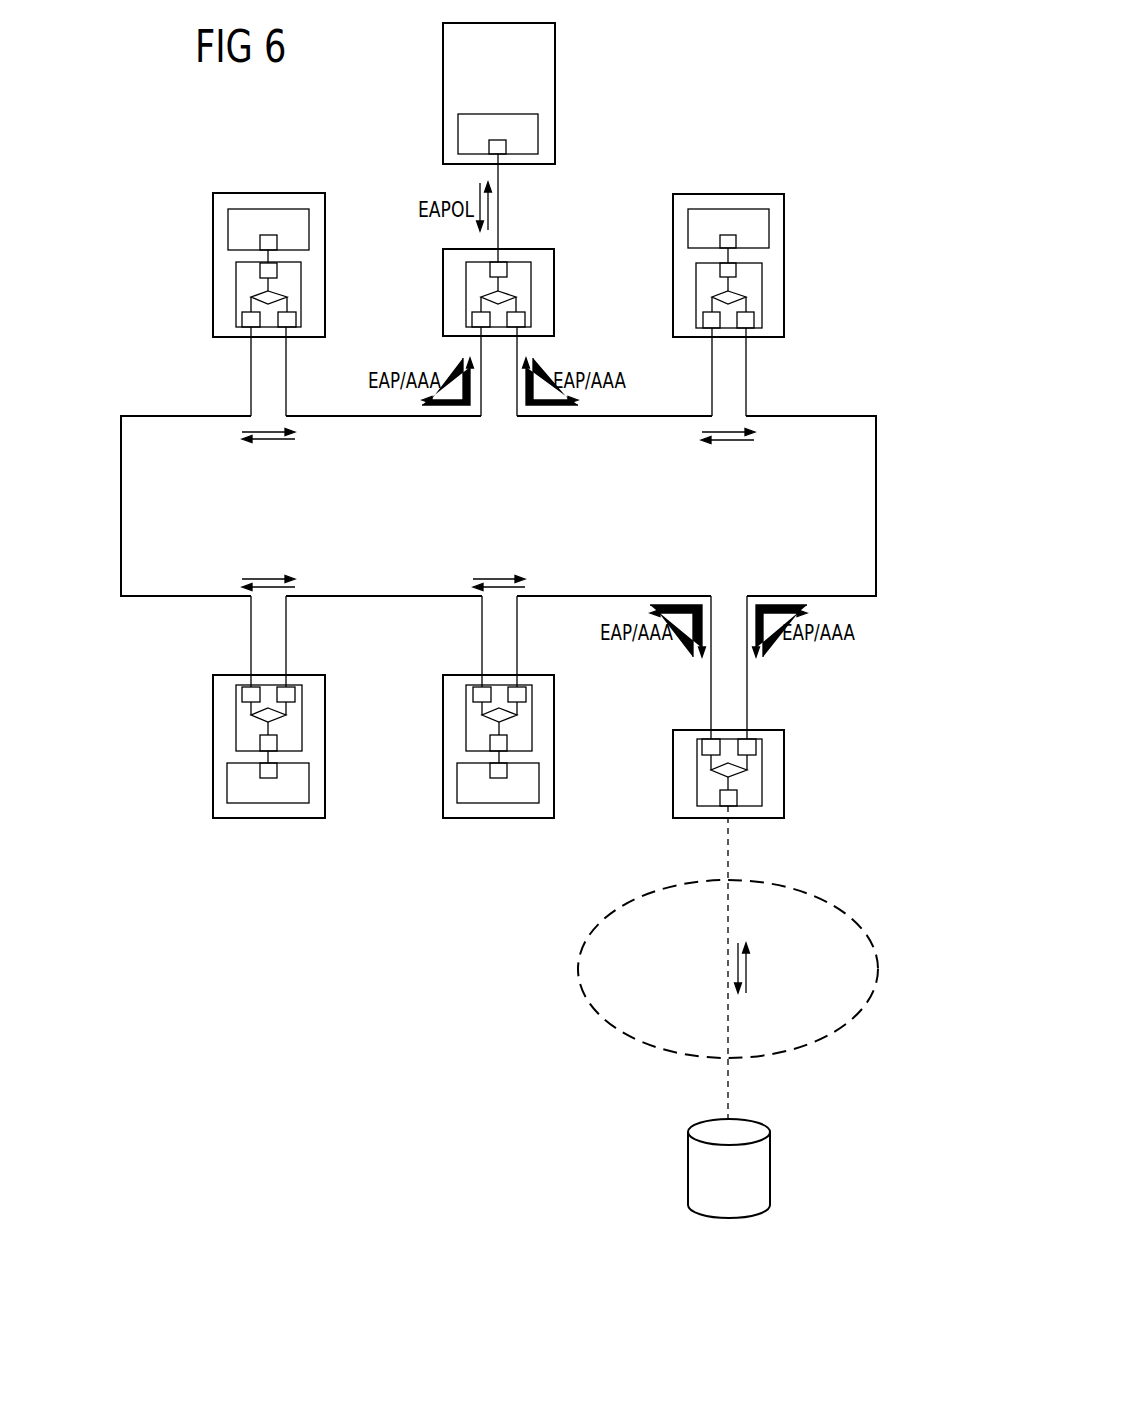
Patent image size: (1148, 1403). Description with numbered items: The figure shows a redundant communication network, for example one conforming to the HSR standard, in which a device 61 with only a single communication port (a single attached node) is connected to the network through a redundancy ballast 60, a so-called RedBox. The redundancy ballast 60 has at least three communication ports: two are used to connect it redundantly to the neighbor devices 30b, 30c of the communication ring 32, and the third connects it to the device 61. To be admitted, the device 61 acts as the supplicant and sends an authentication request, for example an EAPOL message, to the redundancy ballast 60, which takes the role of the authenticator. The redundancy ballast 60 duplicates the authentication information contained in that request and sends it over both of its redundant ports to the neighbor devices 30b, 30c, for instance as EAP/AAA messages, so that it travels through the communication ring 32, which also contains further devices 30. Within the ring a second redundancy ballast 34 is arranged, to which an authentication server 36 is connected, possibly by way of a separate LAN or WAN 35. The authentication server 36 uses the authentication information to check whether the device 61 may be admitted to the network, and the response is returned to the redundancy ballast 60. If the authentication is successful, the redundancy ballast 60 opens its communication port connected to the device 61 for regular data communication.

The further devices 30 is at (268, 818).
The neighbor device 30b is at (268, 193).
The neighbor device 30c is at (728, 194).
The communication ring 32 is at (121, 506).
The redundancy ballast 34 is at (784, 773).
The LAN or WAN 35 is at (584, 991).
The authentication server 36 is at (770, 1170).
The redundancy ballast 60 is at (554, 296).
The device 61 is at (555, 96).